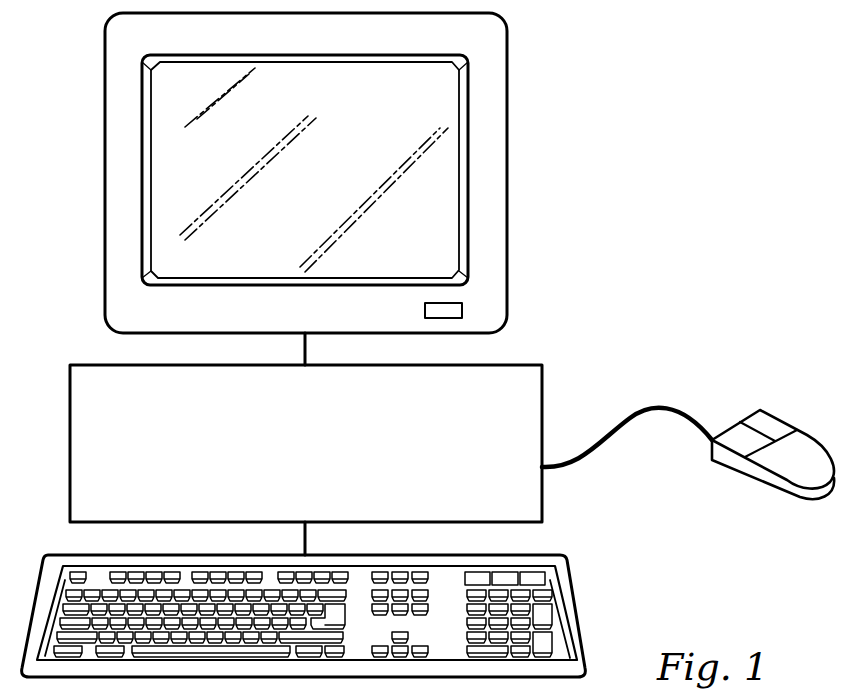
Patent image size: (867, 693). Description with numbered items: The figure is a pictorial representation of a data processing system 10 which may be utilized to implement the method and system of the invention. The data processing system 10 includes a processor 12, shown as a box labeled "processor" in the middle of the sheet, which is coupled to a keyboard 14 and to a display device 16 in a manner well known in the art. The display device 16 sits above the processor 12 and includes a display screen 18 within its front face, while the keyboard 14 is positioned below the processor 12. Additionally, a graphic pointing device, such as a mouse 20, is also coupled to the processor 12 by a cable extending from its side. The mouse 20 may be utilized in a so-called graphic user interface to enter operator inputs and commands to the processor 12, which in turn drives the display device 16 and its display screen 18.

The data processing system 10 is at (664, 326).
The processor 12 is at (542, 405).
The keyboard 14 is at (575, 601).
The display device 16 is at (508, 217).
The display screen 18 is at (450, 122).
The mouse 20 is at (765, 485).